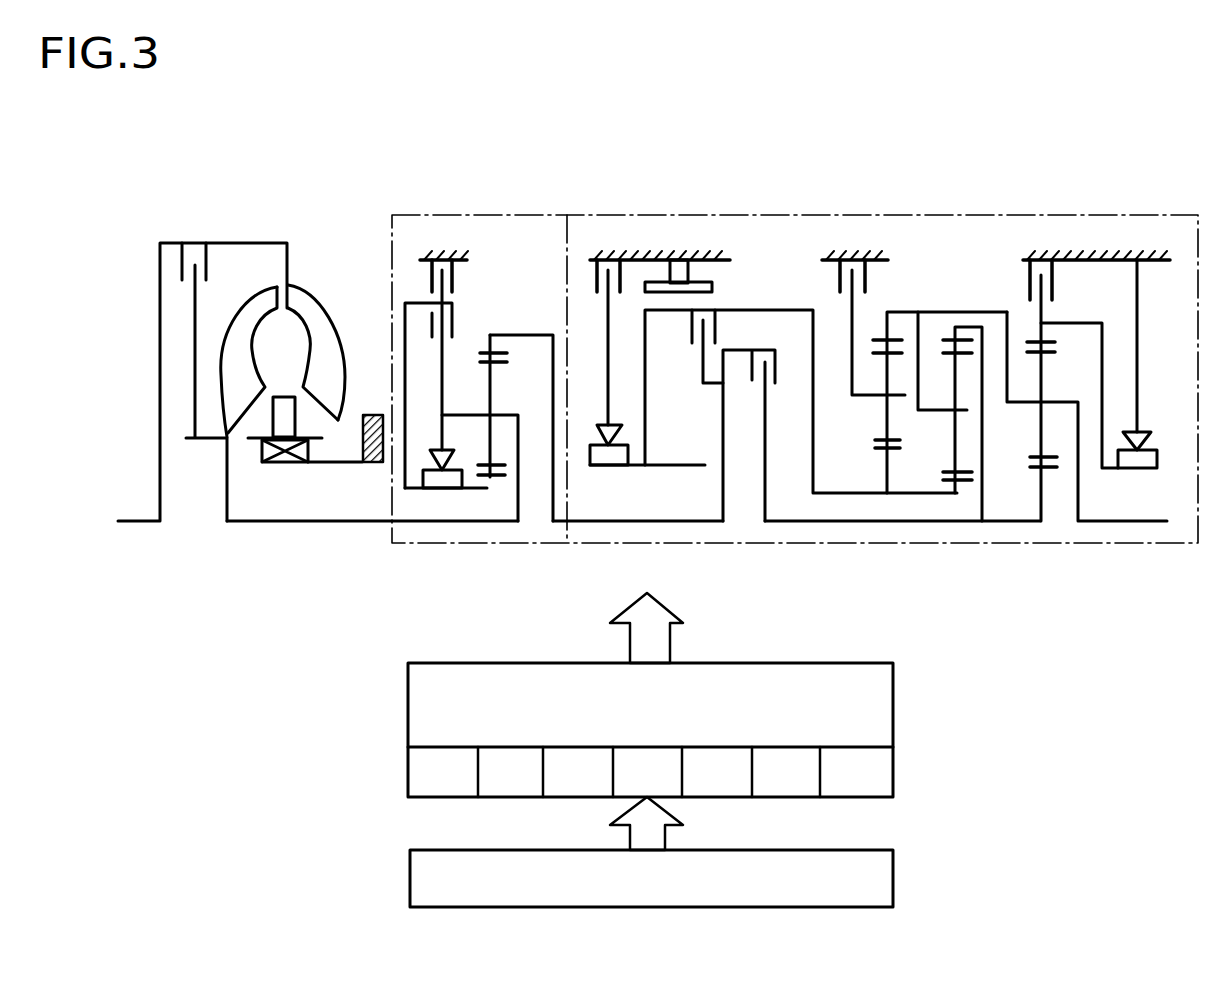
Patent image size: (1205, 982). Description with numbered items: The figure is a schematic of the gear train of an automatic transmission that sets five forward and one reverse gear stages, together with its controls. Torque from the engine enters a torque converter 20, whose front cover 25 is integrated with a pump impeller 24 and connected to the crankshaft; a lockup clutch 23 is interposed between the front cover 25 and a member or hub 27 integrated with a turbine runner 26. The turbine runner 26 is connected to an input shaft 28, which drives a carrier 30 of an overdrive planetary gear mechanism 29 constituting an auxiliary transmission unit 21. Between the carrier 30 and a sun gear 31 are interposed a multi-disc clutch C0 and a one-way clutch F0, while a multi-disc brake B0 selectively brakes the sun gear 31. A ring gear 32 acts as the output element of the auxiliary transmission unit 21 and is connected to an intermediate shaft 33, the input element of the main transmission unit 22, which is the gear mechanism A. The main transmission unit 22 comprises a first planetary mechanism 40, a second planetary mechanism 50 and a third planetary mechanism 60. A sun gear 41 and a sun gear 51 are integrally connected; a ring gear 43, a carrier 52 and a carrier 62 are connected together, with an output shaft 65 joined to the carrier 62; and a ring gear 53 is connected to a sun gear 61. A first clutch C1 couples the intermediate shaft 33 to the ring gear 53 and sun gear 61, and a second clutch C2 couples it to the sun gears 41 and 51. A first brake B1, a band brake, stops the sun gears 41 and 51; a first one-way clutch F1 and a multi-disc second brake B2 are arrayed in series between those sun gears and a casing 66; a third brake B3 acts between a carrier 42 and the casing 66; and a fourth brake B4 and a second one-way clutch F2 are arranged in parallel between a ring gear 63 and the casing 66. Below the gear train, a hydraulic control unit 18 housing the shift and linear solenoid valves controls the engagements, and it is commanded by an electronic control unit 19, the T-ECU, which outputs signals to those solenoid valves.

The hydraulic control unit 18 is at (893, 692).
The automatic transmission electronic control unit (T-ECU) 19 is at (893, 880).
The torque converter 20 is at (244, 358).
The auxiliary transmission unit 21 is at (549, 545).
The main transmission unit 22 is at (917, 213).
The lockup clutch 23 is at (182, 250).
The pump impeller 24 is at (338, 424).
The front cover 25 is at (160, 333).
The turbine runner 26 is at (258, 290).
The member (hub) 27 is at (205, 440).
The input shaft 28 is at (270, 522).
The overdrive planetary gear mechanism 29 is at (474, 505).
The carrier 30 is at (498, 414).
The sun gear 31 is at (497, 478).
The ring gear 32 is at (490, 350).
The intermediate shaft 33 is at (665, 522).
The first planetary mechanism 40 is at (914, 437).
The sun gear 41 is at (880, 450).
The carrier 42 is at (862, 398).
The ring gear 43 is at (887, 330).
The second planetary mechanism 50 is at (941, 430).
The sun gear 51 is at (948, 482).
The carrier 52 is at (925, 412).
The ring gear 53 is at (952, 338).
The third planetary mechanism 60 is at (1072, 447).
The sun gear 61 is at (1032, 466).
The carrier 62 is at (1070, 402).
The ring gear 63 is at (1038, 338).
The output shaft 65 is at (1147, 522).
The casing 66 is at (648, 258).
The gear transmission mechanism A is at (762, 208).
The multi-disc brake B0 is at (432, 276).
The first brake B1 is at (692, 270).
The second brake B2 is at (597, 276).
The third brake B3 is at (840, 283).
The fourth brake B4 is at (1052, 278).
The multi-disc clutch C0 is at (430, 322).
The first clutch C1 is at (775, 362).
The second clutch C2 is at (695, 330).
The one-way clutch F0 is at (440, 478).
The first one-way clutch F1 is at (607, 455).
The second one-way clutch F2 is at (1142, 458).